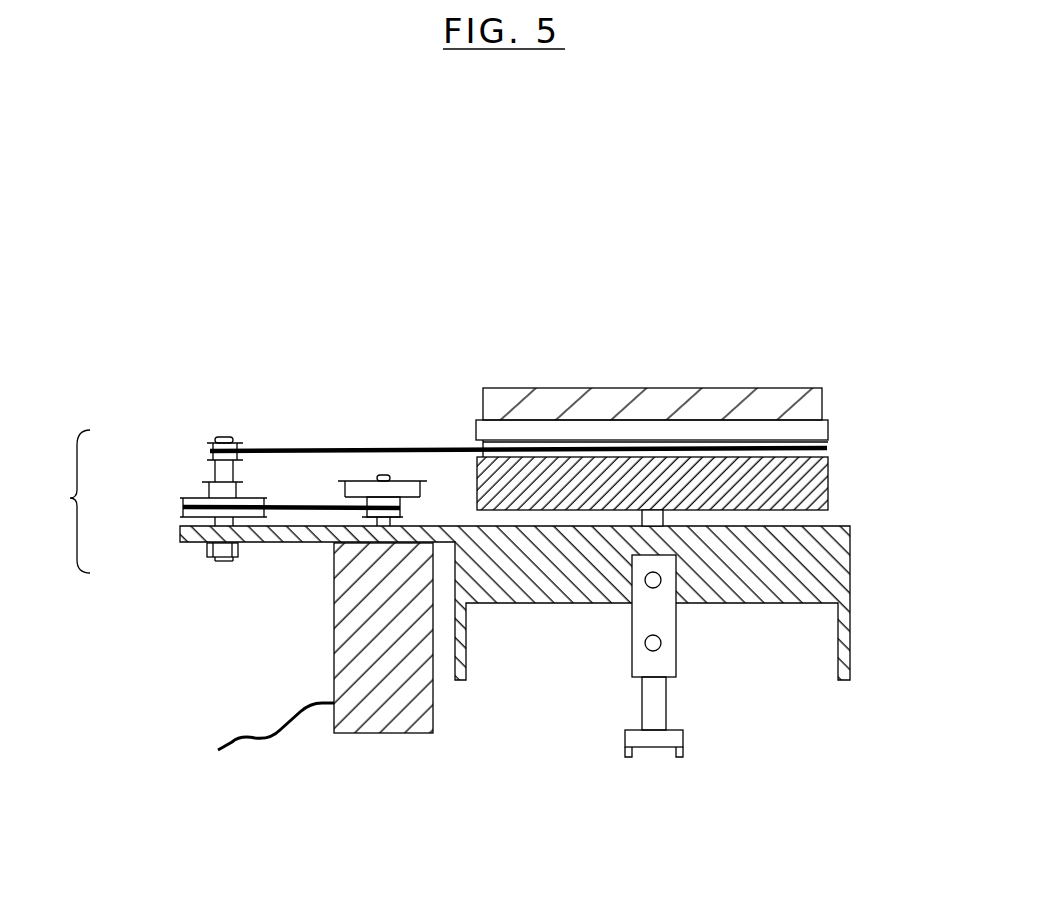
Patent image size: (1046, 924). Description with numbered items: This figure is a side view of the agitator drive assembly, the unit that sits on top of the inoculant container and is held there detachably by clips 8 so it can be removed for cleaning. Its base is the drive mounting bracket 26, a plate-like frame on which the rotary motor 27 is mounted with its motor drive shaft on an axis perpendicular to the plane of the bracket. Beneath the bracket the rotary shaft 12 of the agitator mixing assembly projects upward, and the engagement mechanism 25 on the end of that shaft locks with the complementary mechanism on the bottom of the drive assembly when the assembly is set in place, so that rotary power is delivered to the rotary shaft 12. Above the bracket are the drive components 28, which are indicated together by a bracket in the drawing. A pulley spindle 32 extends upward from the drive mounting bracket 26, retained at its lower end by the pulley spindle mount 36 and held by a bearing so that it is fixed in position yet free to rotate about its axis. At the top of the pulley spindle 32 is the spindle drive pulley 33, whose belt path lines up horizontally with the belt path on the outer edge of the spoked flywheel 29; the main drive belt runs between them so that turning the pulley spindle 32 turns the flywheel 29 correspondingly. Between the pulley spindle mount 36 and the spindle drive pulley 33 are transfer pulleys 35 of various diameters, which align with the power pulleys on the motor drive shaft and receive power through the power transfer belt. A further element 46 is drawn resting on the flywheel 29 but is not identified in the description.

The clips 8 is at (668, 657).
The rotary shaft 12 is at (640, 707).
The engagement mechanism 25 is at (657, 738).
The drive mounting bracket 26 is at (838, 583).
The rotary motor 27 is at (365, 718).
The drive components 28 is at (60, 501).
The flywheel 29 is at (825, 483).
The pulley spindle 32 is at (233, 437).
The spindle drive pulley 33 is at (207, 460).
The transfer pulleys 35 is at (178, 498).
The pulley spindle mount 36 is at (230, 562).
The workpiece 46 is at (540, 402).